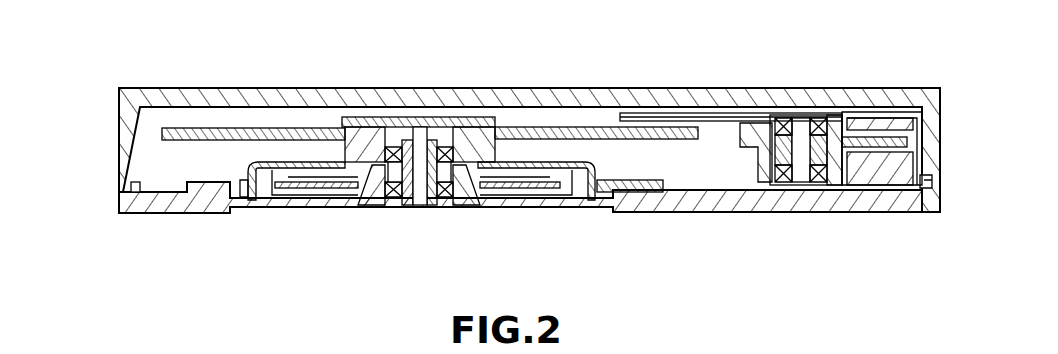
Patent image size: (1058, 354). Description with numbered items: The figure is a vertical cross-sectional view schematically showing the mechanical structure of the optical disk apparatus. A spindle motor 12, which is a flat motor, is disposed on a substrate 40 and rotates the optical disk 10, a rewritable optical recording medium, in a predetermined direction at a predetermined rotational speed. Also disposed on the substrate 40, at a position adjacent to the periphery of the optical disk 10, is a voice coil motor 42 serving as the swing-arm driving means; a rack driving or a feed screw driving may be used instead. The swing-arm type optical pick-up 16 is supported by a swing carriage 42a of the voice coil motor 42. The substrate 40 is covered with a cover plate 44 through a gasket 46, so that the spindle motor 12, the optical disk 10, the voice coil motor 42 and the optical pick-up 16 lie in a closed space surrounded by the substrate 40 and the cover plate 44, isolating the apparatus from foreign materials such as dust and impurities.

The optical disk 10 is at (192, 141).
The spindle motor 12 is at (490, 212).
The swing-arm type optical pick-up 16 is at (636, 82).
The substrate 40 is at (710, 208).
The voice coil motor 42 is at (863, 98).
The swing carriage 42a is at (753, 123).
The cover plate 44 is at (203, 89).
The gasket 46 is at (140, 214).